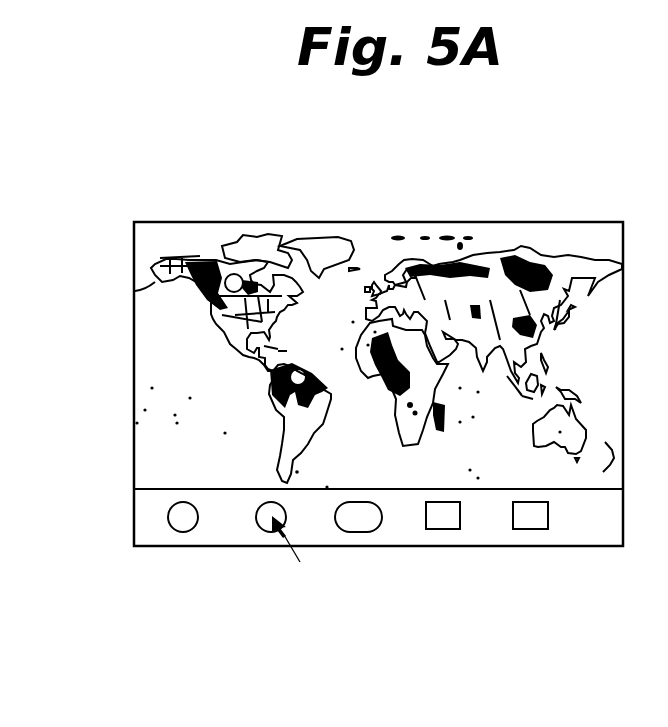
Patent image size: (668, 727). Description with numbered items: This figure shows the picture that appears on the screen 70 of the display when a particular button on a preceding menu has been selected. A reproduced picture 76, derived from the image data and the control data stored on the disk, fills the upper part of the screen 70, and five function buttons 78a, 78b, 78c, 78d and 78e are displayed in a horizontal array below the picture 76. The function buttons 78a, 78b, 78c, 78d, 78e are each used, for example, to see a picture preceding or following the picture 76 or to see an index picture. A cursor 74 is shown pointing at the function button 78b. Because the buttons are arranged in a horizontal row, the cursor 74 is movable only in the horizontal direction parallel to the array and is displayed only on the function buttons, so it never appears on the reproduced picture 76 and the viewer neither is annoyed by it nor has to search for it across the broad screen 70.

The screen 70 is at (570, 222).
The reproduced picture 76 is at (336, 312).
The cursor 74 is at (281, 536).
The function button 78a is at (180, 531).
The function button 78b is at (258, 524).
The function button 78c is at (360, 532).
The function button 78d is at (445, 529).
The function button 78e is at (530, 529).